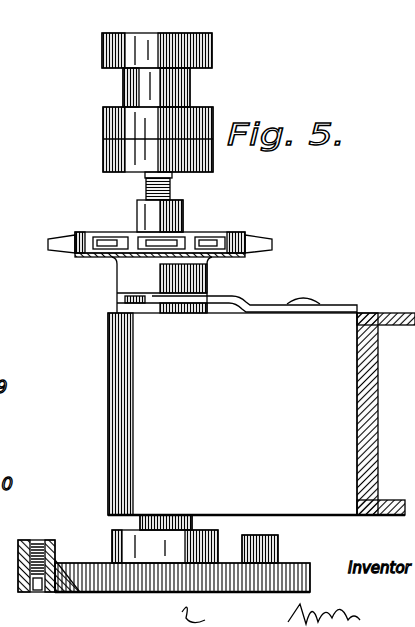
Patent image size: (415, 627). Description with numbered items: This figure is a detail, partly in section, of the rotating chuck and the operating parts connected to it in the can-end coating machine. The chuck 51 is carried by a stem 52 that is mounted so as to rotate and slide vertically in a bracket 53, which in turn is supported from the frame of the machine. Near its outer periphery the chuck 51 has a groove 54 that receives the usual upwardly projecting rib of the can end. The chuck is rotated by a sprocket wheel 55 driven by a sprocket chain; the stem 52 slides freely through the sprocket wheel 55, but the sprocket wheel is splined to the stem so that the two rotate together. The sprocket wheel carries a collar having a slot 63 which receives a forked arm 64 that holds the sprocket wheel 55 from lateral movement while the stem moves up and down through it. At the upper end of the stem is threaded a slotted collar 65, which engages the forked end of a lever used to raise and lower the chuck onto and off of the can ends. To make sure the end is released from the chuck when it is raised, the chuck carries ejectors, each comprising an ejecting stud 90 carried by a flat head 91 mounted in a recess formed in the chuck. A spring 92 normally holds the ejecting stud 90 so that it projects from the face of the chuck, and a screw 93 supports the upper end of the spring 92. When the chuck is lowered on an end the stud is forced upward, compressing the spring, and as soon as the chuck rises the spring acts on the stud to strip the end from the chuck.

The slotted collar 65 is at (207, 108).
The sprocket wheel 55 is at (228, 233).
The forked arm 64 is at (228, 298).
The slot 63 is at (124, 300).
The bracket 53 is at (261, 414).
The stem 52 is at (170, 515).
The chuck 51 is at (182, 561).
The screw 93 is at (42, 542).
The spring 92 is at (55, 558).
The ejecting stud 90 is at (38, 591).
The groove 54 is at (28, 596).
The flat head 91 is at (18, 573).